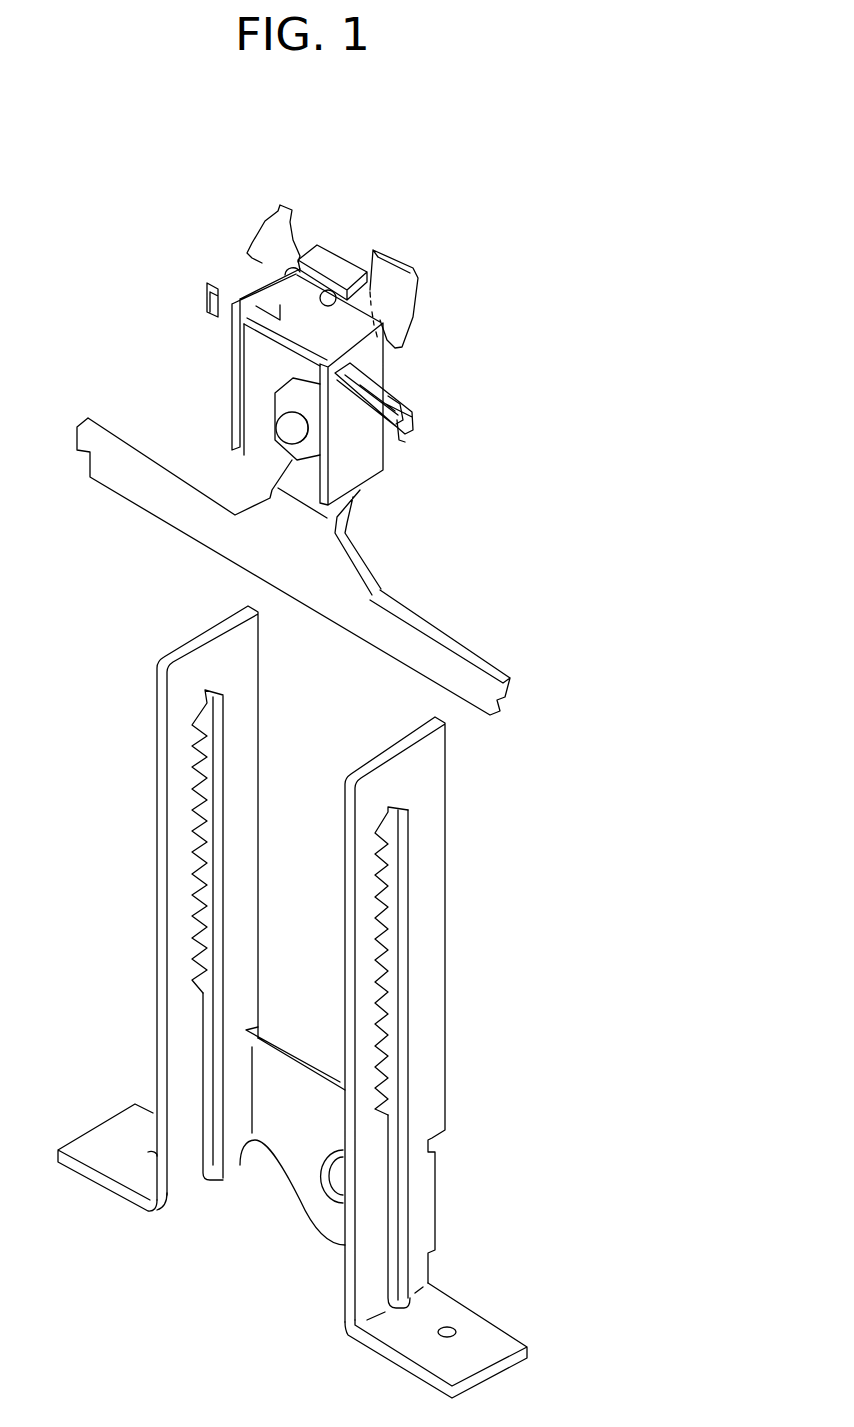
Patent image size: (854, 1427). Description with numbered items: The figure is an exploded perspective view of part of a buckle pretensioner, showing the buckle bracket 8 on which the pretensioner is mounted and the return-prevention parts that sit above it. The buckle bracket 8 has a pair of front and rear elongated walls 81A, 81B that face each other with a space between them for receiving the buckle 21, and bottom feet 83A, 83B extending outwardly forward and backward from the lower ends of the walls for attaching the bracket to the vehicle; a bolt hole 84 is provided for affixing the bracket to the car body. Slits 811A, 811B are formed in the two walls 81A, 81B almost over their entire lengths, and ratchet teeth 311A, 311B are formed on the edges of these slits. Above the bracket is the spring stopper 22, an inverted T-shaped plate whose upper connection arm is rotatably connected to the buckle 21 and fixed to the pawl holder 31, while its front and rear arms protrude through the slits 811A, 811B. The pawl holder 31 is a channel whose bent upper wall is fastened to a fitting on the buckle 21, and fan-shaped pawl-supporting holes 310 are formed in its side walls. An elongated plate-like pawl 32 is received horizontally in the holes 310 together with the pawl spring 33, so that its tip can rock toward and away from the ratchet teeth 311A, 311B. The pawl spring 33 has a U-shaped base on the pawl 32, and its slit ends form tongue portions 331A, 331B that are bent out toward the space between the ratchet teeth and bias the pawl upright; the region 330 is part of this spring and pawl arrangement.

The buckle bracket 8 is at (150, 850).
The buckle 21 is at (406, 262).
The spring stopper 22 is at (430, 650).
The pawl holder 31 is at (230, 406).
The pawl 32 is at (413, 413).
The pawl spring 33 is at (275, 357).
The pawl-supporting holes 310 is at (268, 300).
The lever pivot portion 330 is at (392, 400).
The tongue portion 331A is at (205, 307).
The tongue portion 331B is at (395, 435).
The front elongated wall 81A is at (196, 903).
The rear elongated wall 81B is at (436, 1019).
The bottom foot 83A is at (107, 1167).
The bottom foot 83B is at (480, 1340).
The bolt hole 84 is at (330, 1186).
The ratchet teeth 311A is at (195, 782).
The ratchet teeth 311B is at (388, 917).
The slit 811A is at (222, 1032).
The slit 811B is at (397, 1115).